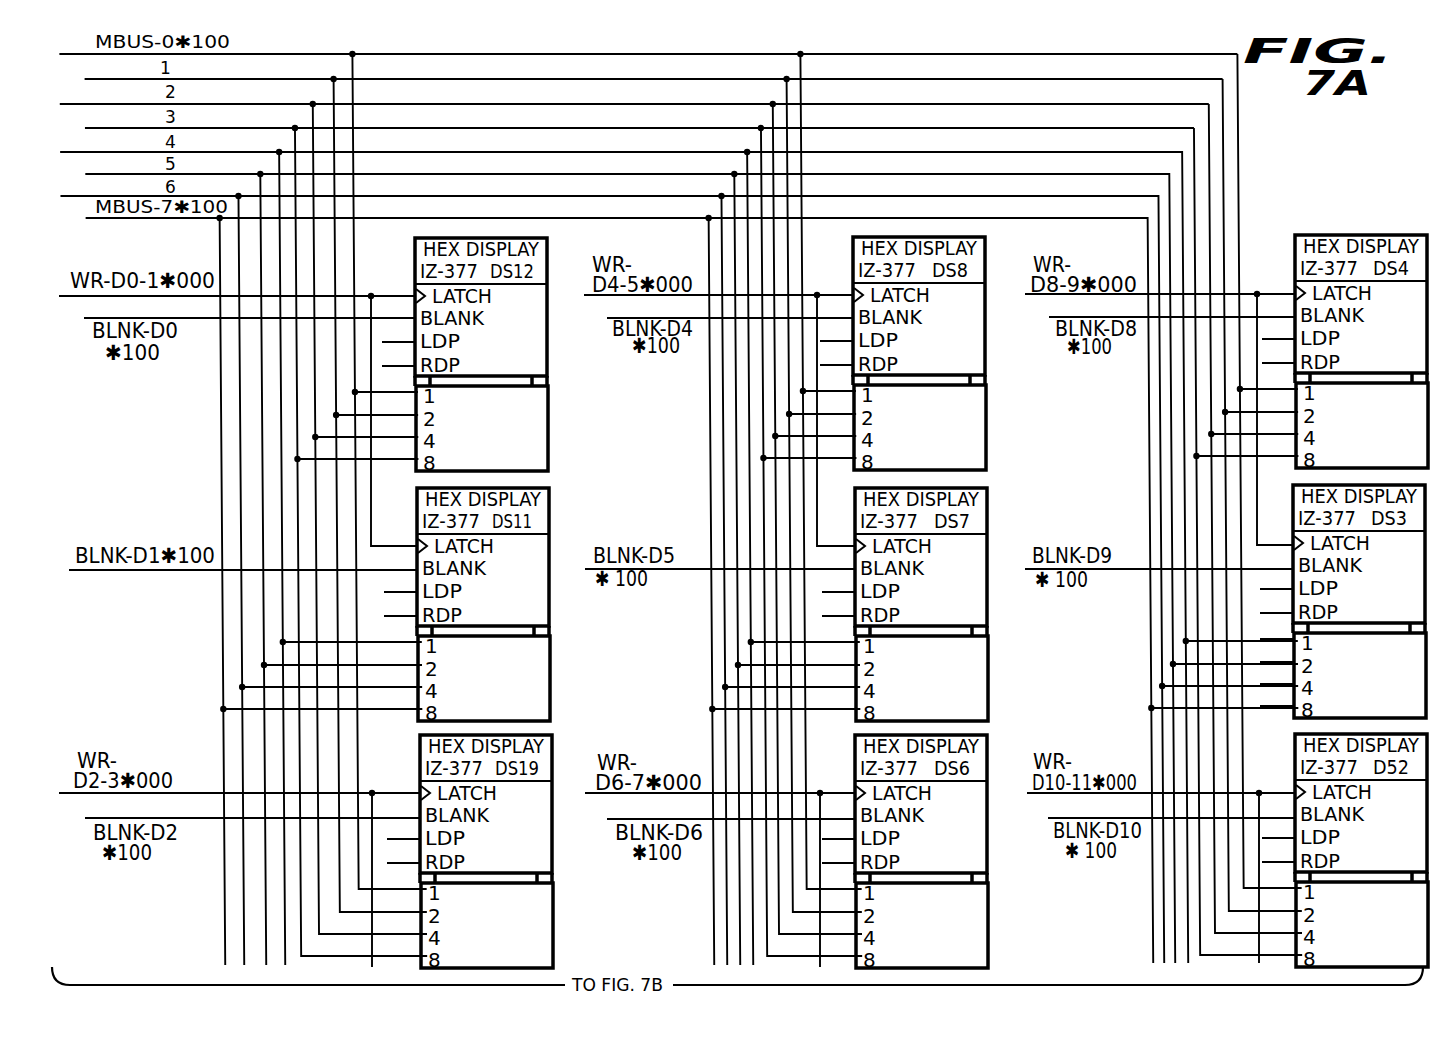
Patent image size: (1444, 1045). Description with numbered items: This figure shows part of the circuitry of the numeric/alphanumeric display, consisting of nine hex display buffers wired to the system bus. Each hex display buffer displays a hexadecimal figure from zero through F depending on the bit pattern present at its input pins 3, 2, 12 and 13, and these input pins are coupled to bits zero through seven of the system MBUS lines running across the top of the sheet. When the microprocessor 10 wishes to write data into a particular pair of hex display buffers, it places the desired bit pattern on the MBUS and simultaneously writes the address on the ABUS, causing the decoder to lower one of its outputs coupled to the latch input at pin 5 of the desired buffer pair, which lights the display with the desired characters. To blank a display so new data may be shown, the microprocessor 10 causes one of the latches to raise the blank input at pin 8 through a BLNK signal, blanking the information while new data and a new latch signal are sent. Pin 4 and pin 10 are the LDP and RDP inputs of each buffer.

The latch input pin 5 is at (665, 504).
The blank input pin 8 is at (682, 557).
The LDP pin 4 is at (838, 578).
The microprocessor 10 is at (838, 602).
The input pin 3 is at (838, 628).
The input pin 2 is at (838, 651).
The input pin 13 is at (838, 673).
The input pin 12 is at (838, 695).